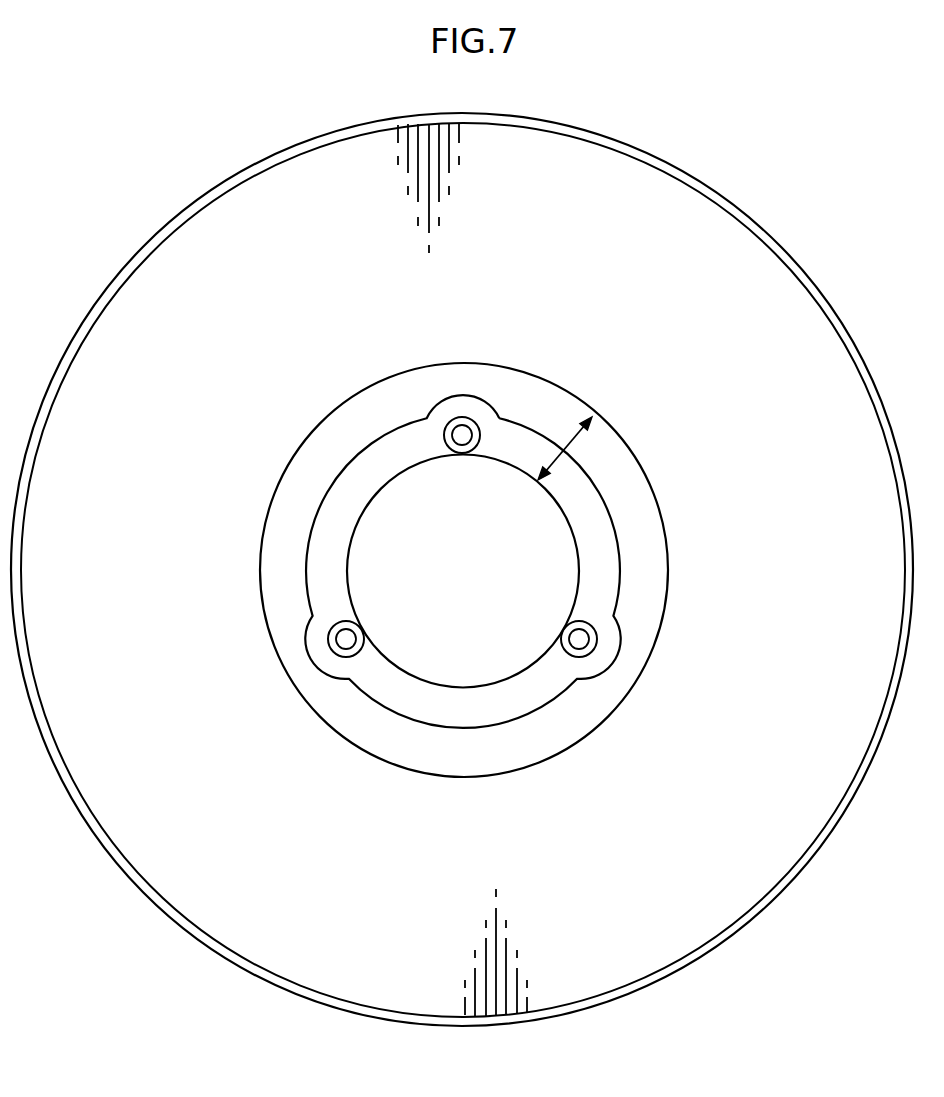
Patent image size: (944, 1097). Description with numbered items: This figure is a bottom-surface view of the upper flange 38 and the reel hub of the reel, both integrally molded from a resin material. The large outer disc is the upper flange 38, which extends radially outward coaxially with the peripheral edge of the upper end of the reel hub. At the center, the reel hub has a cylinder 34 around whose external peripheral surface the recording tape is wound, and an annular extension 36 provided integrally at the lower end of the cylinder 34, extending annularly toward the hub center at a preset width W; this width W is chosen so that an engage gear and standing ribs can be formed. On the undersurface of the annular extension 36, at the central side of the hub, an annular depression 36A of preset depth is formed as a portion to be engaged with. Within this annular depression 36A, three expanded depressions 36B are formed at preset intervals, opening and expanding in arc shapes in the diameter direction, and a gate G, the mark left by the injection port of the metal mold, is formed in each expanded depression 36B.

The upper flange 38 is at (743, 268).
The cylinder 34 is at (662, 517).
The annular extension 36 is at (633, 612).
The annular depression 36A is at (465, 710).
The expanded depression 36B is at (598, 658).
The gate G is at (345, 637).
The width W is at (565, 448).